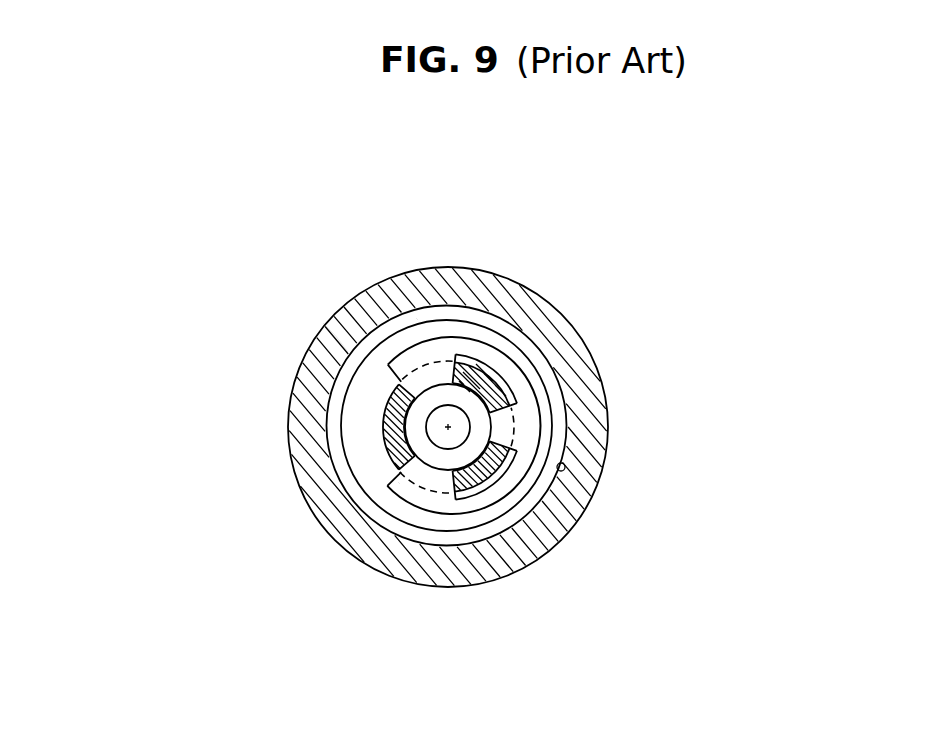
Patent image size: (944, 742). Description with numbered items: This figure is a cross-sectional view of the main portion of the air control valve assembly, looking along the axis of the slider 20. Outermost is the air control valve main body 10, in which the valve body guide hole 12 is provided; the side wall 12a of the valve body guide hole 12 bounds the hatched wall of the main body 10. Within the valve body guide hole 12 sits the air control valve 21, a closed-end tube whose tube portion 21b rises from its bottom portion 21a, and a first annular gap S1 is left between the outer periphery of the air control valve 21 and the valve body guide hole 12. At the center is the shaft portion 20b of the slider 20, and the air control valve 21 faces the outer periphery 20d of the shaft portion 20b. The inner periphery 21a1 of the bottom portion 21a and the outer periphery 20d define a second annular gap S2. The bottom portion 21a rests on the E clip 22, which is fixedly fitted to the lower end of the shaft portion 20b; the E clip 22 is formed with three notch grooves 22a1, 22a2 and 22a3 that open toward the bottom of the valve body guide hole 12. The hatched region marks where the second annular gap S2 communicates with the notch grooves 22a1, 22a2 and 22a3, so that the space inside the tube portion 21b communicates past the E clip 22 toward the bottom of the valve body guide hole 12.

The air control valve main body 10 is at (593, 413).
The valve body guide hole 12 is at (544, 425).
The side wall of the valve guide hole 12a is at (566, 468).
The slider 20 is at (462, 457).
The shaft portion 20b is at (509, 524).
The outer periphery of the shaft portion 20d is at (348, 352).
The air control valve 21 is at (360, 434).
The bottom portion 21a is at (133, 419).
The inner periphery of the bottom portion 21a1 is at (386, 462).
The tube portion 21b is at (380, 418).
The E clip 22 is at (487, 353).
The notch groove 22a1 is at (386, 406).
The notch groove 22a2 is at (490, 386).
The notch groove 22a3 is at (482, 478).
The first annular gap S1 is at (416, 318).
The second annular gap S2 is at (398, 482).